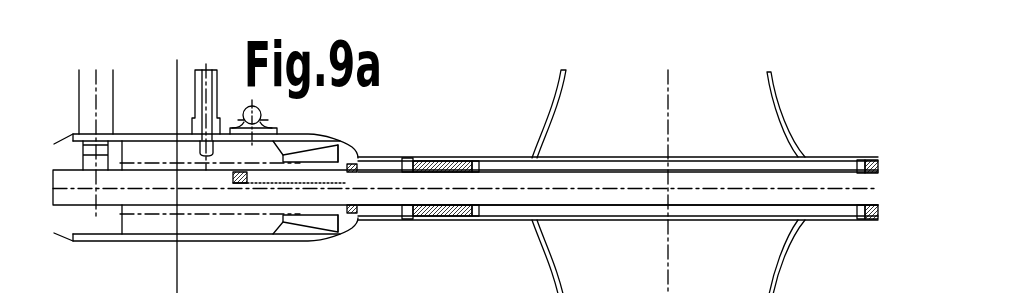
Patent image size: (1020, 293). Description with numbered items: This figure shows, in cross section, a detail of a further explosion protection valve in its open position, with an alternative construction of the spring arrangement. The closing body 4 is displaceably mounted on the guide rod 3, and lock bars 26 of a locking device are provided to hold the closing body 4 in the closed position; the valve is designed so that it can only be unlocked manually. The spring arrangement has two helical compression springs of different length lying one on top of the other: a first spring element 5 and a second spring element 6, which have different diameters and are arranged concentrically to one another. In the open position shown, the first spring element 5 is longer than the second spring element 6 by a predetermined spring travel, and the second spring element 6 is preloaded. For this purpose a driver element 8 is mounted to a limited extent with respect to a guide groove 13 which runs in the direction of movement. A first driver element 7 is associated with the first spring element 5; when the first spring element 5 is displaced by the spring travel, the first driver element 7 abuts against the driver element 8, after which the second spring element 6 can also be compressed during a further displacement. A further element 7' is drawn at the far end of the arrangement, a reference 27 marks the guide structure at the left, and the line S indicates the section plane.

The guide rod 3 is at (509, 196).
The closing body 4 is at (568, 88).
The first spring element 5 is at (388, 153).
The second spring element 6 is at (148, 163).
The first driver element 7 is at (460, 163).
The bearing 7' is at (870, 146).
The driver element 8 is at (358, 152).
The guide groove 13 is at (258, 178).
The lock bar 26 is at (210, 67).
The guide 27 is at (100, 82).
The section line S is at (681, 172).